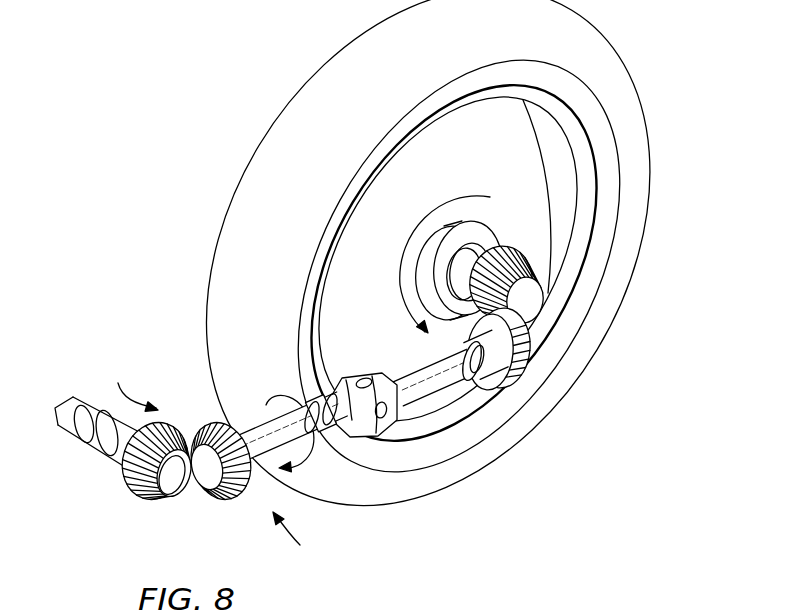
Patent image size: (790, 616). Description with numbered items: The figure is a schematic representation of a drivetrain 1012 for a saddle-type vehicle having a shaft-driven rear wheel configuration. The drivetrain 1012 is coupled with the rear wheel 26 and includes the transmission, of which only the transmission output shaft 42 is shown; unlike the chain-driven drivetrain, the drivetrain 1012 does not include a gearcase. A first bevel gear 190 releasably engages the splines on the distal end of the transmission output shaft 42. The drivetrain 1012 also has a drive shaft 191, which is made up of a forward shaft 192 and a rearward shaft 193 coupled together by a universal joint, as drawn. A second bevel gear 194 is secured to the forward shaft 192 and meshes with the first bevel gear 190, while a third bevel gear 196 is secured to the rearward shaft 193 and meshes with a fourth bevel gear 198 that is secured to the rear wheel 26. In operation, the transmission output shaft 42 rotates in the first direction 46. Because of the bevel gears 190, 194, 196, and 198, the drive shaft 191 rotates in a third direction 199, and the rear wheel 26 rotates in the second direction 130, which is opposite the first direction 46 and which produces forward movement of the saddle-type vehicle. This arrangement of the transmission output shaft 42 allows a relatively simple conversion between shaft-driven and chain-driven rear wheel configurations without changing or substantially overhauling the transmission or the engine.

The rear wheel 26 is at (448, 490).
The transmission output shaft 42 is at (63, 427).
The first direction 46 is at (131, 384).
The second direction 130 is at (446, 203).
The first bevel gear 190 is at (150, 501).
The drive shaft 191 is at (418, 362).
The forward shaft 192 is at (266, 428).
The rearward shaft 193 is at (438, 392).
The second bevel gear 194 is at (212, 500).
The third bevel gear 196 is at (524, 375).
The fourth bevel gear 198 is at (533, 262).
The third direction 199 is at (327, 445).
The drivetrain 1012 is at (295, 542).